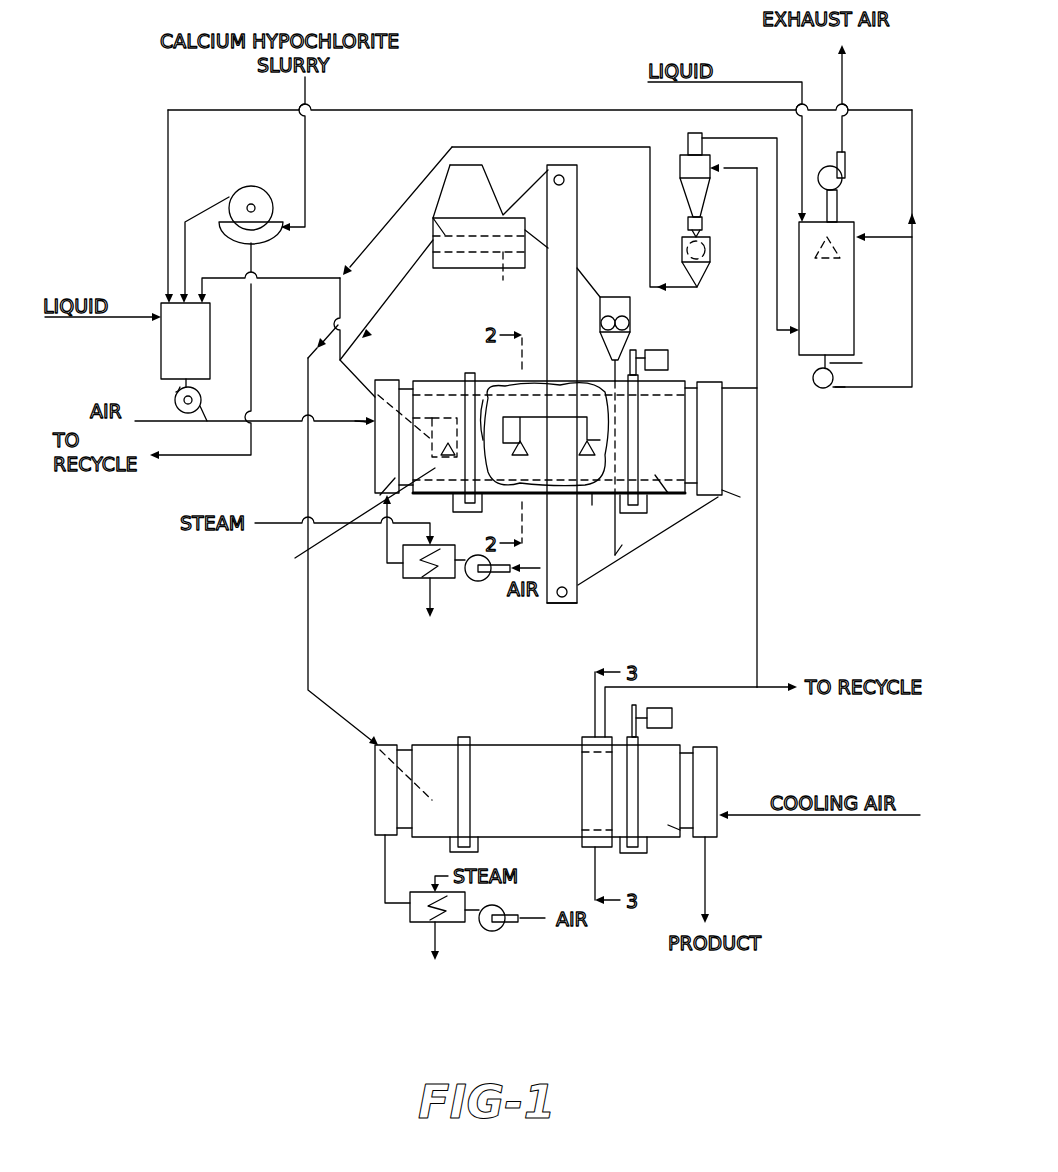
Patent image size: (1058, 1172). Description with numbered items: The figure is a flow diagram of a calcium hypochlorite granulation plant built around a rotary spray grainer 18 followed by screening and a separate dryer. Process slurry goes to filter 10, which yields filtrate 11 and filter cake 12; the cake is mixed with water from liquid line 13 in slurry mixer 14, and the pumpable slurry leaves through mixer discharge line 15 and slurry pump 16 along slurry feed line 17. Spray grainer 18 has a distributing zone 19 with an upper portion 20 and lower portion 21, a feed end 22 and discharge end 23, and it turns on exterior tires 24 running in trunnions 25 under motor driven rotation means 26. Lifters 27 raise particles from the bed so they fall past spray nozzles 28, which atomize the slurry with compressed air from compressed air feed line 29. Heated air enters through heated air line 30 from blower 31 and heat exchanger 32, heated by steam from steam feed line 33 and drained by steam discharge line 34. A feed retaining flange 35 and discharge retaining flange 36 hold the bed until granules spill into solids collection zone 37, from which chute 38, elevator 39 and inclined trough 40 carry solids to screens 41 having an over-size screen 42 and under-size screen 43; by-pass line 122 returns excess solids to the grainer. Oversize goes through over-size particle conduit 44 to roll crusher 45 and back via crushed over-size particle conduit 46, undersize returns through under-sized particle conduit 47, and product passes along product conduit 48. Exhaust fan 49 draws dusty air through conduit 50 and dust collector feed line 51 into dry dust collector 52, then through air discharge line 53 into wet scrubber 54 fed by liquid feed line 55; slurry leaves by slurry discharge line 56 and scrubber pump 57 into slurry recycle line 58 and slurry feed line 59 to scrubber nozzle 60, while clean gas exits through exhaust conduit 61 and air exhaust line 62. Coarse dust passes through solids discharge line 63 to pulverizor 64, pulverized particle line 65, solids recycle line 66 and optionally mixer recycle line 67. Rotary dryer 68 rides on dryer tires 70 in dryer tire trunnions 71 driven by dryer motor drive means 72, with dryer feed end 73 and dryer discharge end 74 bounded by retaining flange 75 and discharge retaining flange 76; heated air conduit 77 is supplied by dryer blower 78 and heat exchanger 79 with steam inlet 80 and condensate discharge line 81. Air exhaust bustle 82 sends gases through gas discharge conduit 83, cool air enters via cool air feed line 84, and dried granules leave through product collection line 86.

The filter 10 is at (258, 186).
The filtrate 11 is at (253, 300).
The filter cake 12 is at (200, 212).
The liquid line 13 is at (128, 312).
The slurry mixer 14 is at (160, 352).
The mixer discharge line 15 is at (175, 390).
The slurry pump 16 is at (202, 392).
The slurry feed line 17 is at (272, 416).
The spray grainer 18 is at (492, 390).
The distributing zone 19 is at (440, 398).
The upper portion 20 is at (565, 395).
The lower portion 21 is at (592, 506).
The feed end 22 is at (372, 458).
The discharge end 23 is at (752, 452).
The exterior tires 24 is at (466, 376).
The trunnions 25 is at (475, 512).
The motor driven rotation means 26 is at (658, 350).
The lifters 27 is at (418, 382).
The spray nozzles 28 is at (556, 458).
The compressed air feed line 29 is at (338, 430).
The heated air line 30 is at (385, 552).
The blower 31 is at (484, 582).
The heat exchanger 32 is at (402, 588).
The steam feed line 33 is at (426, 542).
The steam discharge line 34 is at (422, 610).
The feed retaining flange 35 is at (380, 490).
The discharge retaining flange 36 is at (672, 482).
The solids collection zone 37 is at (742, 497).
The chute 38 is at (690, 520).
The elevator 39 is at (572, 580).
The inclined trough 40 is at (532, 194).
The screens 41 is at (458, 218).
The over-size screen 42 is at (416, 198).
The under-size screen 43 is at (503, 282).
The over-size particle conduit 44 is at (596, 292).
The roll crusher 45 is at (633, 318).
The crushed over-size particle conduit 46 is at (618, 540).
The under-sized particle conduit 47 is at (418, 288).
The product conduit 48 is at (316, 344).
The exhaust fan 49 is at (848, 162).
The conduit 50 is at (740, 392).
The dust collector feed line 51 is at (756, 308).
The dry dust collector 52 is at (706, 192).
The air discharge line 53 is at (777, 345).
The wet scrubber 54 is at (816, 390).
The liquid feed line 55 is at (808, 82).
The slurry discharge line 56 is at (862, 365).
The scrubber pump 57 is at (825, 392).
The slurry recycle line 58 is at (914, 345).
The slurry feed line 59 is at (890, 243).
The scrubber nozzle 60 is at (850, 270).
The exhaust conduit 61 is at (840, 205).
The air exhaust line 62 is at (846, 85).
The solids discharge line 63 is at (702, 232).
The pulverizor 64 is at (711, 248).
The pulverized particle line 65 is at (668, 275).
The solids recycle line 66 is at (338, 300).
The mixer recycle line 67 is at (330, 272).
The rotary dryer 68 is at (528, 760).
The dryer tires 70 is at (466, 738).
The dryer tire trunnions 71 is at (480, 848).
The dryer motor drive means 72 is at (672, 714).
The dryer feed end 73 is at (372, 818).
The dryer discharge end 74 is at (720, 768).
The retaining flange 75 is at (405, 828).
The discharge retaining flange 76 is at (675, 826).
The heated air conduit 77 is at (384, 870).
The dryer blower 78 is at (496, 932).
The heat exchanger 79 is at (412, 930).
The steam inlet 80 is at (444, 872).
The condensate discharge line 81 is at (440, 938).
The air exhaust bustle 82 is at (582, 850).
The gas discharge conduit 83 is at (760, 658).
The cool air feed line 84 is at (756, 817).
The product collection line 86 is at (710, 896).
The by-pass line 122 is at (386, 238).